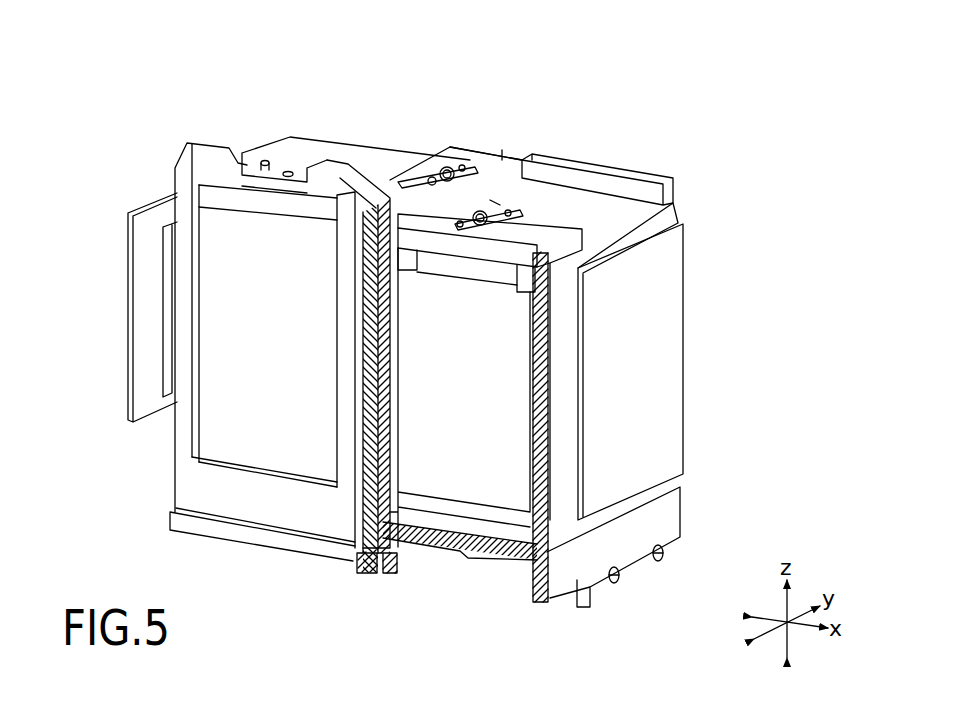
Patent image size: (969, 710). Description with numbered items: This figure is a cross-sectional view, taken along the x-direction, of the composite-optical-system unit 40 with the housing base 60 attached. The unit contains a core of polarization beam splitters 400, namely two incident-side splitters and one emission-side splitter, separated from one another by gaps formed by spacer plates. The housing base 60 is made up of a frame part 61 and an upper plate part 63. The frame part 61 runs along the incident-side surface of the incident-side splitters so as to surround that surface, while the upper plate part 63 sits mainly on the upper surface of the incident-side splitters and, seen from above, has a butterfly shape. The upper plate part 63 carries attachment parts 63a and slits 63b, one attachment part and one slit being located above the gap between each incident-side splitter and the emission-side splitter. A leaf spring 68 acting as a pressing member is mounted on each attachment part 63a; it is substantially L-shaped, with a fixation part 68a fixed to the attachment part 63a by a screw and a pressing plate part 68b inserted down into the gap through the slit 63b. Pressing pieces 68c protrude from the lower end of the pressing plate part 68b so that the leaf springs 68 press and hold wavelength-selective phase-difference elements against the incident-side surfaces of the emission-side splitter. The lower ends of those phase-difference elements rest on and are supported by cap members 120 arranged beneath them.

The composite-optical-system unit 40 is at (385, 120).
The housing base 60 is at (208, 145).
The frame part 61 is at (182, 445).
The upper plate part 63 is at (352, 162).
The attachment part 63a is at (502, 157).
The slit 63b is at (470, 217).
The leaf spring 68 is at (430, 167).
The fixation part 68a is at (495, 207).
The pressing plate part 68b is at (465, 247).
The pressing piece 68c is at (412, 262).
The cap member 120 is at (505, 574).
The polarization beam splitter 400 is at (270, 150).